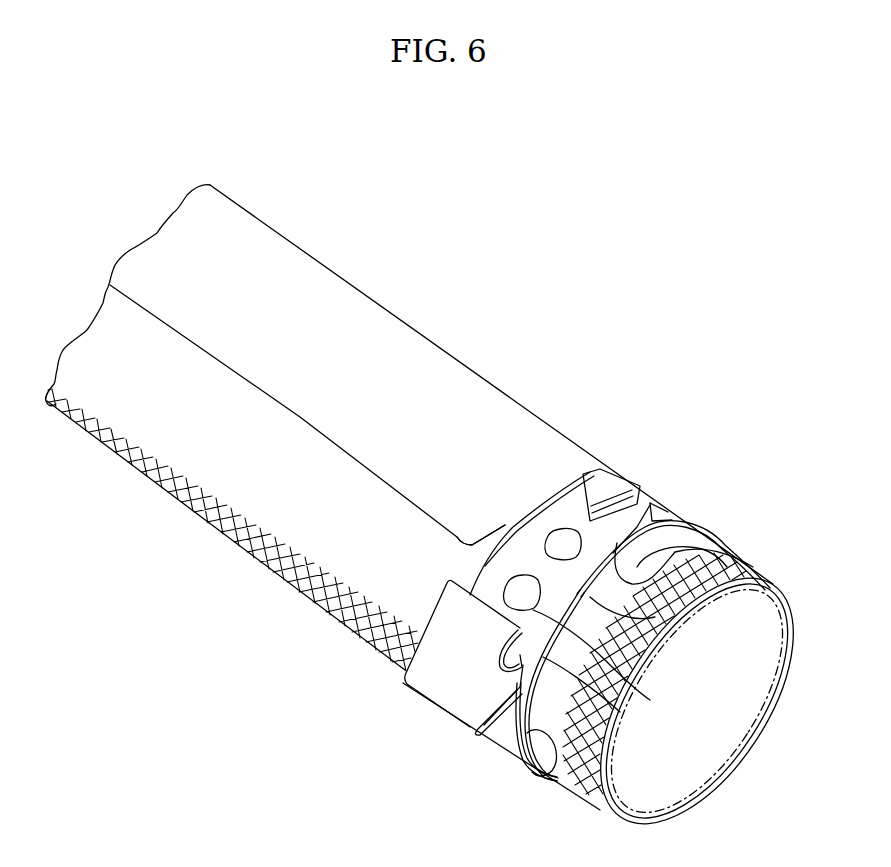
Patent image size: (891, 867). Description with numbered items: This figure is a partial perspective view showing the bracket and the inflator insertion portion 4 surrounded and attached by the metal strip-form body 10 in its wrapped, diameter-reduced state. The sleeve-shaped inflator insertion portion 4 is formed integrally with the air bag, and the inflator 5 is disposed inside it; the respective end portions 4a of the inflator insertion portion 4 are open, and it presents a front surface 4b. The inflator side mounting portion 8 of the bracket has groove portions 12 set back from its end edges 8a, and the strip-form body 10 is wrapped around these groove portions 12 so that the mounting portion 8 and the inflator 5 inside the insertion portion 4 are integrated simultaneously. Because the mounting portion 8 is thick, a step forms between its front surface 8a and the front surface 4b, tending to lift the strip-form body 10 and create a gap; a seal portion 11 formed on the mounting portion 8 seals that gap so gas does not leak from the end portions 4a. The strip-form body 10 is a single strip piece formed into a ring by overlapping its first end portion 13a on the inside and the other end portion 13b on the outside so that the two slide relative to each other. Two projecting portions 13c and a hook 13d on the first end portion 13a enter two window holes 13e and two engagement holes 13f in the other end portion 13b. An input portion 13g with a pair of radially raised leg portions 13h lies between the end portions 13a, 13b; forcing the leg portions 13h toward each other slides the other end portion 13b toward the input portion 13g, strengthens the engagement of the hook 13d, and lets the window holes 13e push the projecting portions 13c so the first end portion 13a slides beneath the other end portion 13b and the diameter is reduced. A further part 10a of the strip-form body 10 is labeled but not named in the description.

The inflator insertion portion 4 is at (278, 512).
The end portions 4a is at (793, 634).
The front surface 4b is at (330, 566).
The inflator 5 is at (768, 722).
The inflator side mounting portion 8 is at (485, 372).
The front surface 8a is at (503, 356).
The strip-form body 10 is at (443, 748).
The clamp band edge 10a is at (485, 557).
The seal portion 11 is at (510, 520).
The groove portions 12 is at (688, 517).
The first end portion 13a is at (535, 752).
The other end portion 13b is at (653, 510).
The projecting portions 13c is at (505, 590).
The hook 13d is at (607, 492).
The window holes 13e is at (628, 687).
The engagement holes 13f is at (583, 497).
The input portion 13g is at (405, 700).
The leg portions 13h is at (505, 745).